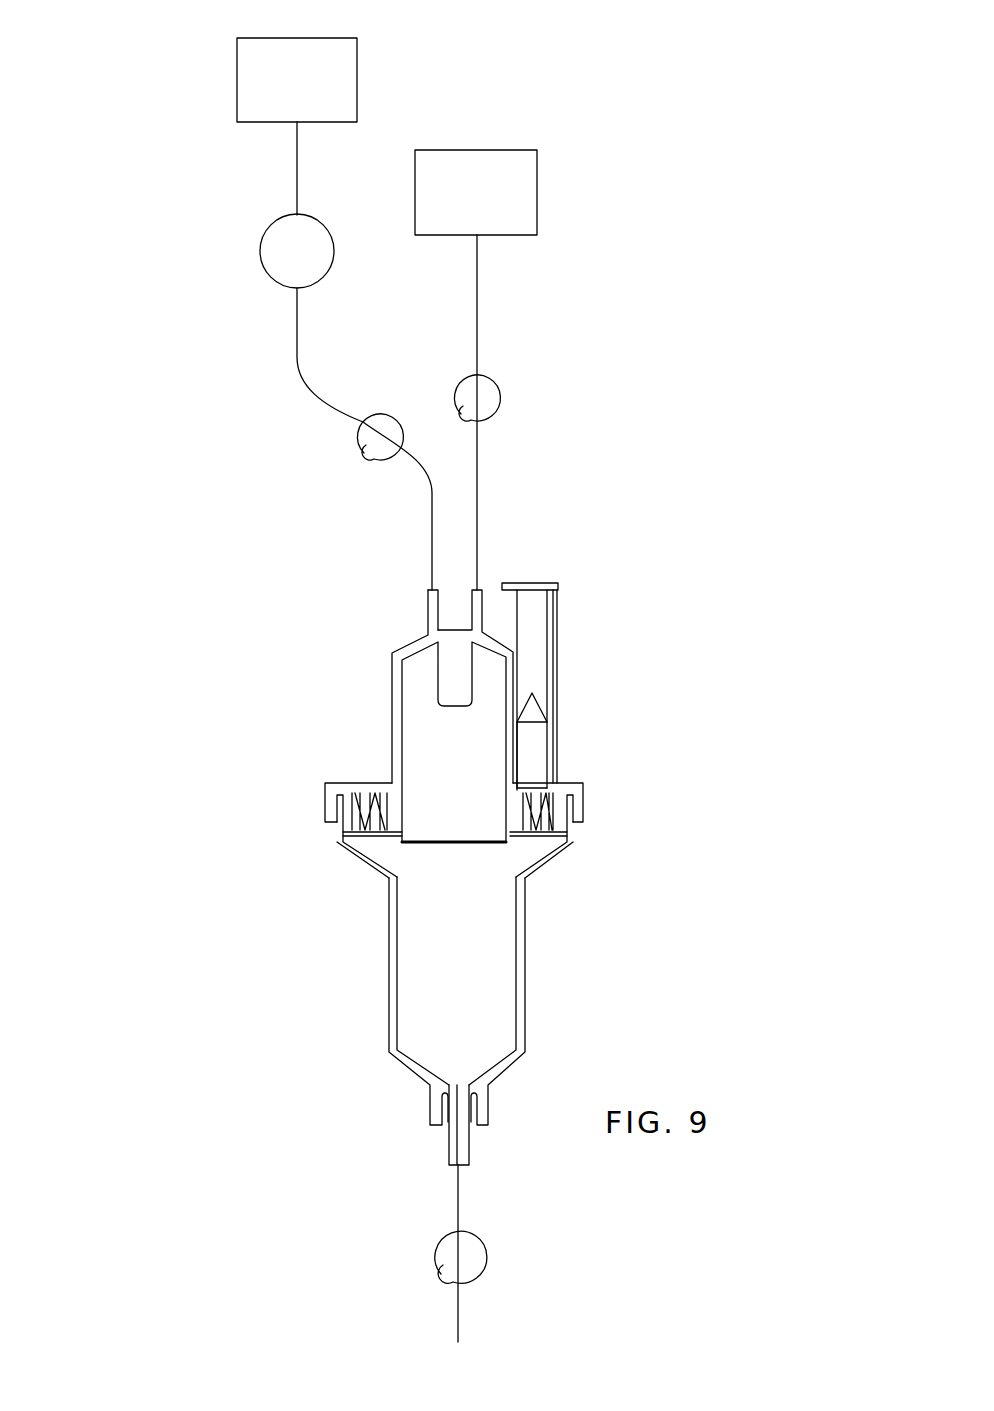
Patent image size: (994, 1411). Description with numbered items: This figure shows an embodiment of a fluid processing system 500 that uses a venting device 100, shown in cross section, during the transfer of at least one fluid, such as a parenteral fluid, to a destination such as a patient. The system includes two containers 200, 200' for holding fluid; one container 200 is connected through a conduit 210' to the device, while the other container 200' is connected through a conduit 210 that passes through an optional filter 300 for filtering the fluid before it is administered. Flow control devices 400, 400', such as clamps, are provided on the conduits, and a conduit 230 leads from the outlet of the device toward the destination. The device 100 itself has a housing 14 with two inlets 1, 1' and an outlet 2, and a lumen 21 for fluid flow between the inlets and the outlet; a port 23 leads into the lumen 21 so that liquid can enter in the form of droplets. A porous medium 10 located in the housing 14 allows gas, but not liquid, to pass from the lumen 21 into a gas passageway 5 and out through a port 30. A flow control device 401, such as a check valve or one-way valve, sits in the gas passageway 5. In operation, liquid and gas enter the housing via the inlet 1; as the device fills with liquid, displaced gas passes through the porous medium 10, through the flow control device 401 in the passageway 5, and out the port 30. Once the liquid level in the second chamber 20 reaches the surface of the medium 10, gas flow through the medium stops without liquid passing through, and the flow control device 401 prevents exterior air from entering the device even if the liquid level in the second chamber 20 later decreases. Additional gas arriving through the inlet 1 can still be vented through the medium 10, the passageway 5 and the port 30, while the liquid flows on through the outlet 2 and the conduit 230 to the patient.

The container 200' is at (237, 61).
The container 200 is at (533, 171).
The conduit 210 is at (290, 356).
The conduit 210' is at (557, 412).
The filter 300 is at (257, 250).
The flow control device 400 is at (445, 441).
The flow control device 400' is at (408, 1278).
The inlet 1' is at (393, 666).
The inlet 1 is at (521, 686).
The port 23 is at (453, 700).
The lumen 21 is at (463, 803).
The port 30 is at (533, 585).
The gas passageway 5 is at (535, 760).
The flow control device 401 is at (535, 718).
The housing 14 is at (250, 770).
The porous medium 10 is at (377, 833).
The second chamber 20 is at (457, 1032).
The outlet 2 is at (450, 1148).
The conduit 230 is at (458, 1198).
The device 100 is at (262, 1037).
The system 500 is at (800, 835).